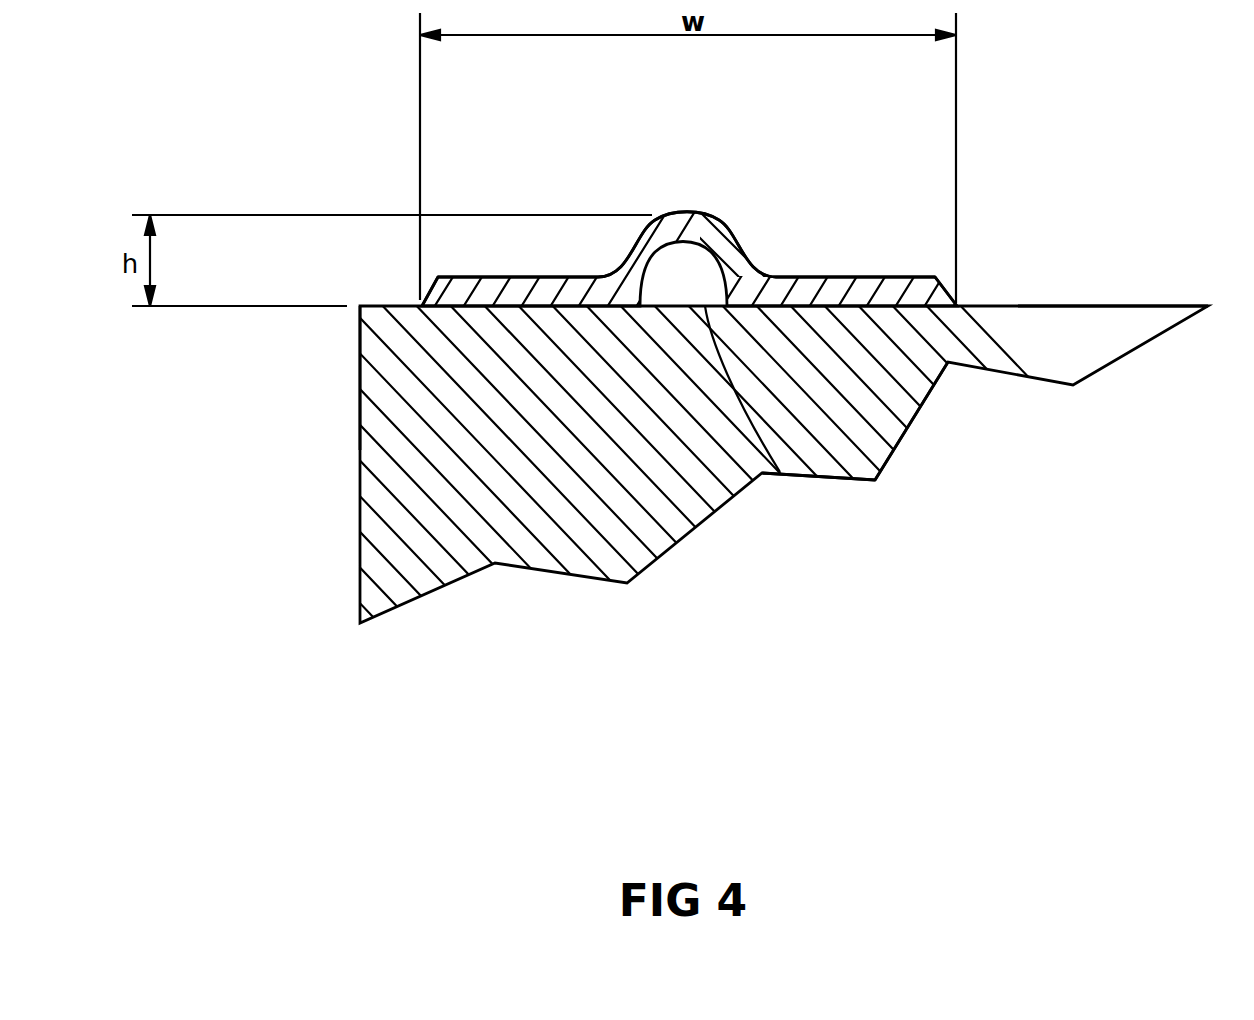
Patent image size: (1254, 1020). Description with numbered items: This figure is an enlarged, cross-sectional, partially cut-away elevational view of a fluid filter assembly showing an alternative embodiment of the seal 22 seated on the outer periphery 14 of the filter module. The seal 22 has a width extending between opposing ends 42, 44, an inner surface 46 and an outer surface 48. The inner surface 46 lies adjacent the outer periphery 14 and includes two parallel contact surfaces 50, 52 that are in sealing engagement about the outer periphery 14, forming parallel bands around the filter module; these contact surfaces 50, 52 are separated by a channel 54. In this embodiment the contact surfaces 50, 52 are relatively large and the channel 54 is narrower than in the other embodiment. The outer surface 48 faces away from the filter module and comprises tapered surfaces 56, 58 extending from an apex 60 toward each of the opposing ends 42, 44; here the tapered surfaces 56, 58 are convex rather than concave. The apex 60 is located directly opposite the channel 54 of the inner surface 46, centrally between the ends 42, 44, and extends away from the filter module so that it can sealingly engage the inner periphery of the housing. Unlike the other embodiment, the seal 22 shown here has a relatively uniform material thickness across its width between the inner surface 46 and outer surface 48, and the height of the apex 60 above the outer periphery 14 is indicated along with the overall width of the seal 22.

The outer periphery 14 is at (932, 306).
The seal 22 is at (856, 277).
The opposing end 42 is at (426, 300).
The opposing end 44 is at (945, 301).
The inner surface 46 is at (577, 306).
The outer surface 48 is at (556, 277).
The contact surface 50 is at (443, 306).
The contact surface 52 is at (868, 306).
The channel 54 is at (800, 475).
The tapered surface 56 is at (645, 230).
The tapered surface 58 is at (725, 231).
The apex 60 is at (686, 212).